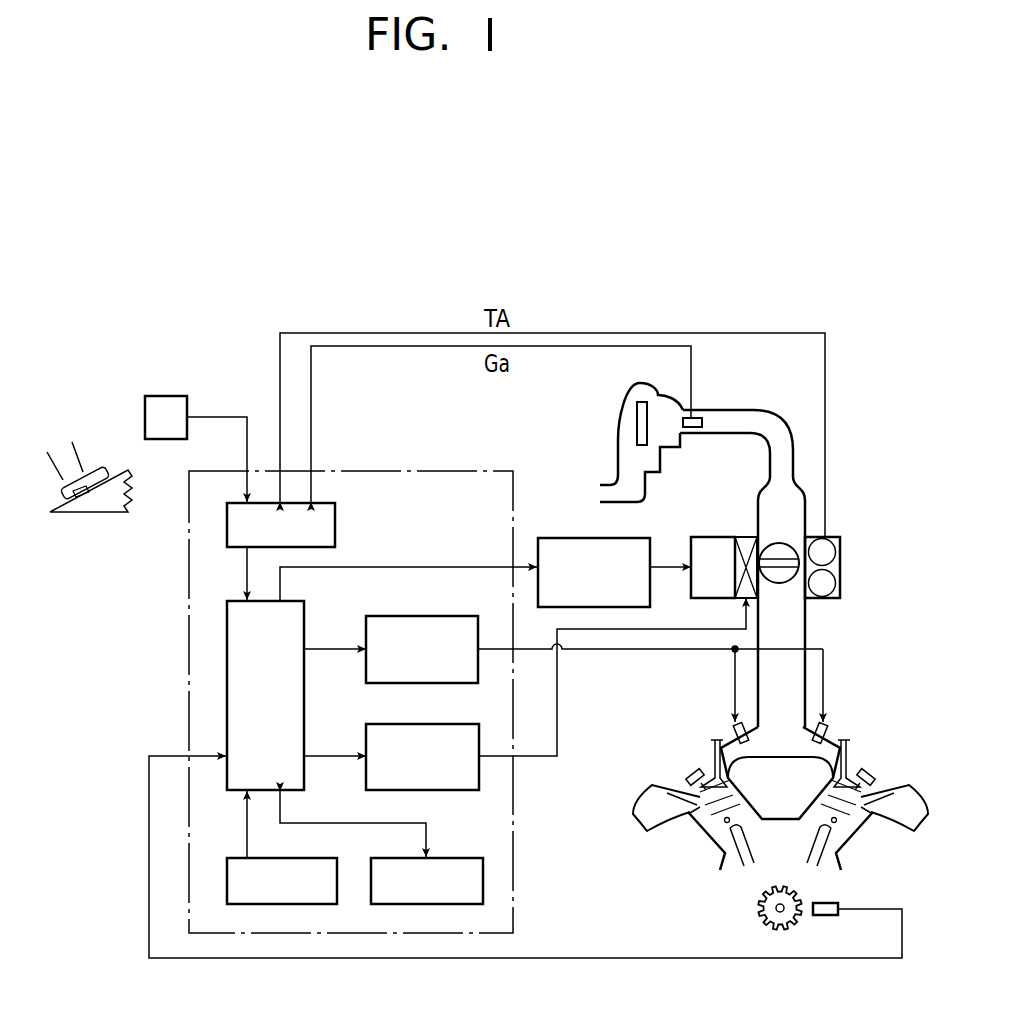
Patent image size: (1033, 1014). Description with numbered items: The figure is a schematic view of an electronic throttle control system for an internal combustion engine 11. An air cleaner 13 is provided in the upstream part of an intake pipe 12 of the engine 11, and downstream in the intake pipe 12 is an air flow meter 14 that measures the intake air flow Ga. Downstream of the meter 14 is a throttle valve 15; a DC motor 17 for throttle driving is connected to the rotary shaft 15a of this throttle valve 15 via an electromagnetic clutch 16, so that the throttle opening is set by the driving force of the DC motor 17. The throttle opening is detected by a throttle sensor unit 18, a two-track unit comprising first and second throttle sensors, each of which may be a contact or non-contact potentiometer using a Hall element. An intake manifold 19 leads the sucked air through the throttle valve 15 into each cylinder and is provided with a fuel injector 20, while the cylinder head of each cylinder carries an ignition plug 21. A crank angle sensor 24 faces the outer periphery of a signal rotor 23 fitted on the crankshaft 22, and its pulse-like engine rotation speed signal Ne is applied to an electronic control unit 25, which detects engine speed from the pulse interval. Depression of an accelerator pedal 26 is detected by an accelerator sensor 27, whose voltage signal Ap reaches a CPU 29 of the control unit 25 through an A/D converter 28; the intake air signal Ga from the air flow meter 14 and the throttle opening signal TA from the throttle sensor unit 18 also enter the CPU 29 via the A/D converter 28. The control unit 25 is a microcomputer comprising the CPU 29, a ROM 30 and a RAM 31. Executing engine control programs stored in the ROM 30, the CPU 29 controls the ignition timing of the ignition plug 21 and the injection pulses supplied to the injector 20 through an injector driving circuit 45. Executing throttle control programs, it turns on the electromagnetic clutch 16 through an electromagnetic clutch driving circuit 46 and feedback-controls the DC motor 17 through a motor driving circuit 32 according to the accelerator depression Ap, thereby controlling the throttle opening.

The internal combustion engine 11 is at (672, 735).
The intake pipe 12 is at (807, 627).
The air cleaner 13 is at (637, 418).
The air flow meter 14 is at (702, 418).
The throttle valve 15 is at (783, 548).
The rotary shaft 15a is at (783, 573).
The electromagnetic clutch 16 is at (750, 536).
The DC motor 17 is at (703, 537).
The throttle sensor unit 18 is at (840, 553).
The intake manifold 19 is at (828, 742).
The fuel injector 20 is at (733, 728).
The ignition plug 21 is at (866, 771).
The crankshaft 22 is at (776, 909).
The signal rotor 23 is at (757, 897).
The crank angle sensor 24 is at (833, 902).
The electronic control unit 25 is at (190, 612).
The accelerator pedal 26 is at (117, 470).
The accelerator sensor 27 is at (172, 396).
The A/D converter 28 is at (336, 530).
The CPU 29 is at (227, 601).
The ROM 30 is at (322, 858).
The RAM 31 is at (455, 858).
The motor driving circuit 32 is at (552, 538).
The injector driving circuit 45 is at (457, 616).
The electromagnetic clutch driving circuit 46 is at (453, 724).